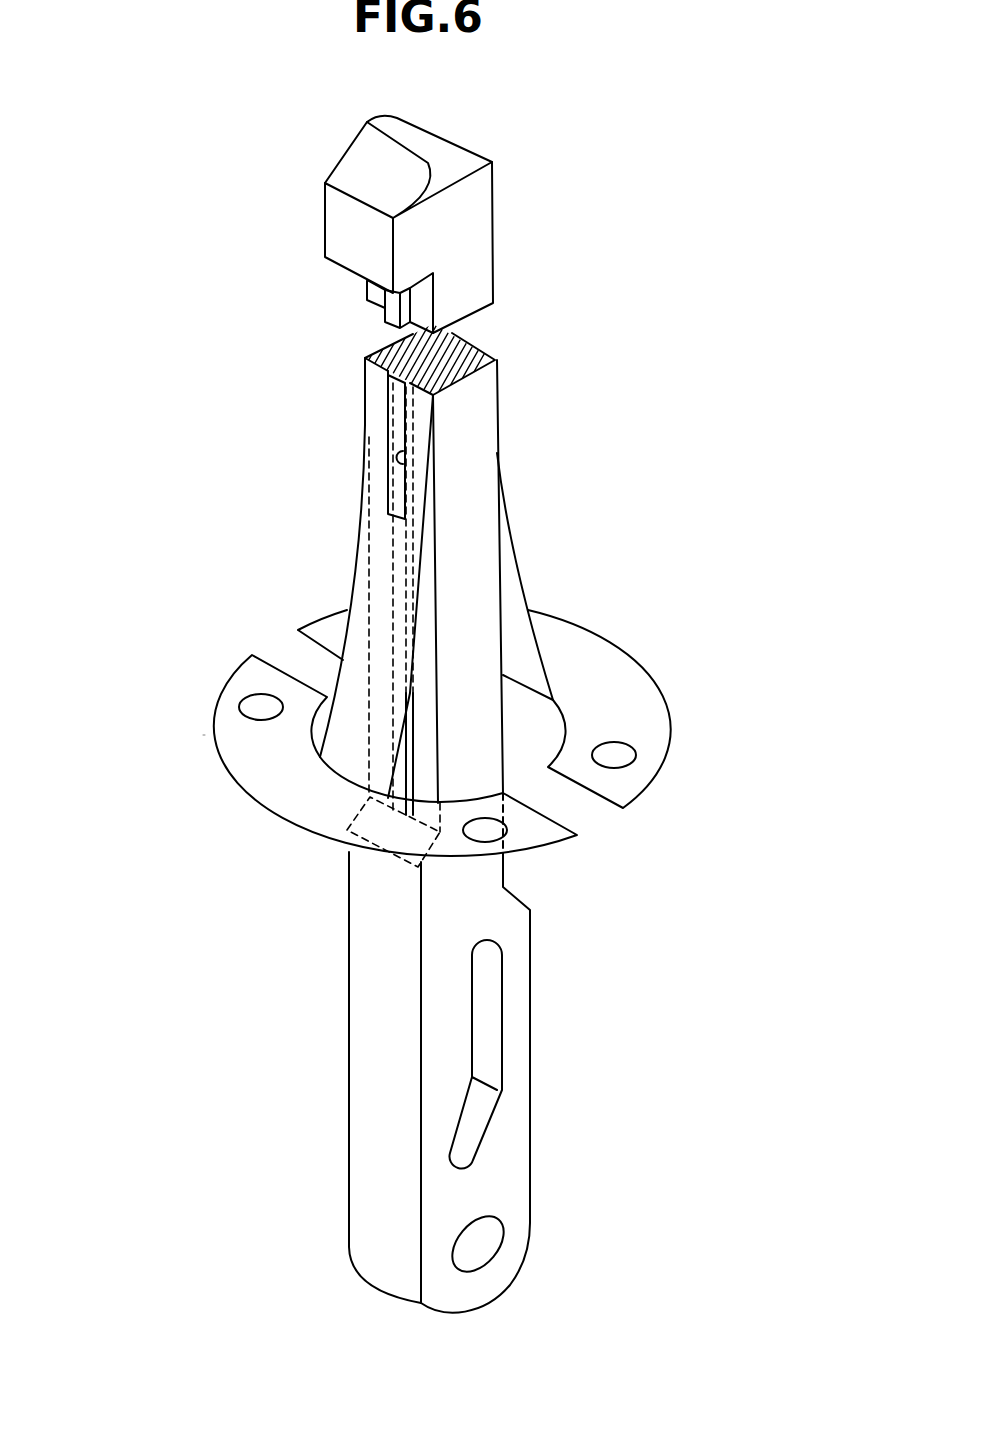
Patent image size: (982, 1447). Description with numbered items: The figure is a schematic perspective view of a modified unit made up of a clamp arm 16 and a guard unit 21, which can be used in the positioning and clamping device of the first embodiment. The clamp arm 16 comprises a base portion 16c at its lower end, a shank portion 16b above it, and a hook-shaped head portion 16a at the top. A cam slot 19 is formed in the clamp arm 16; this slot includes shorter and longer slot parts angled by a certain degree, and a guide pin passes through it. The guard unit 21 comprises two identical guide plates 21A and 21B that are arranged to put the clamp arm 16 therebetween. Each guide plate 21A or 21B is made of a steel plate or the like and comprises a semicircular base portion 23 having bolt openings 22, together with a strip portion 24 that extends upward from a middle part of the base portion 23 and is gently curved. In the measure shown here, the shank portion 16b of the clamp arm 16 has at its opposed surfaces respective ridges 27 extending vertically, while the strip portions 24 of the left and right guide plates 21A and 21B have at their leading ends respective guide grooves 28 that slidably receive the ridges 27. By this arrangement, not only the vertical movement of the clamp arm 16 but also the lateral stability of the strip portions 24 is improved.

The clamp arm 16 is at (338, 1021).
The hook-shaped head portion 16a is at (337, 233).
The shank portion 16b is at (478, 517).
The base portion 16c is at (510, 1133).
The cam slot 19 is at (490, 1047).
The guard unit 21 is at (676, 684).
The guide plate 21A is at (208, 783).
The guide plate 21B is at (604, 614).
The bolt openings 22 is at (260, 707).
The semicircular base portion 23 is at (622, 662).
The strip portion 24 is at (353, 576).
The ridges 27 is at (474, 334).
The guide grooves 28 is at (403, 470).